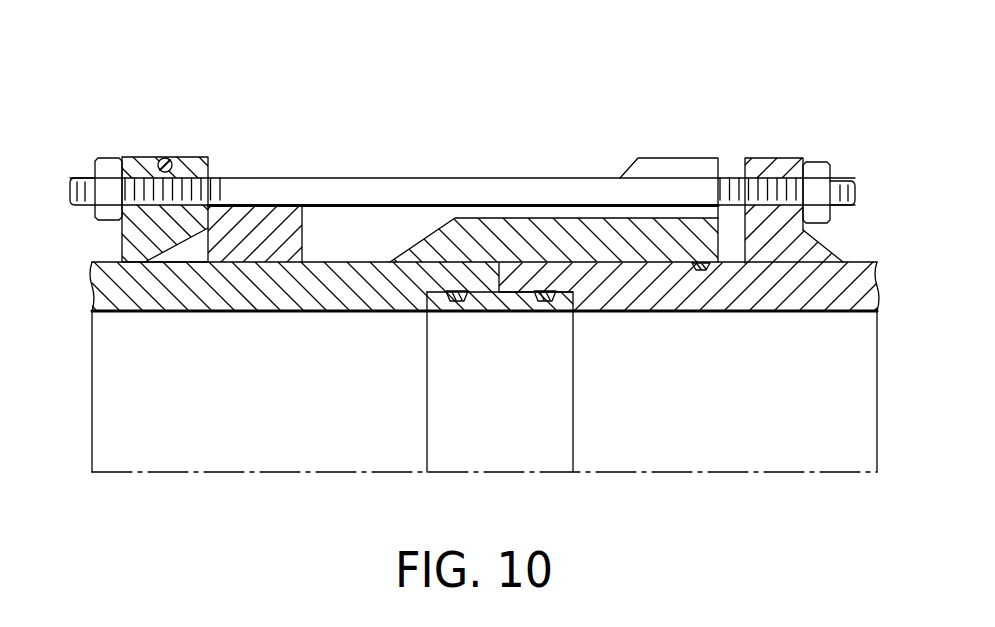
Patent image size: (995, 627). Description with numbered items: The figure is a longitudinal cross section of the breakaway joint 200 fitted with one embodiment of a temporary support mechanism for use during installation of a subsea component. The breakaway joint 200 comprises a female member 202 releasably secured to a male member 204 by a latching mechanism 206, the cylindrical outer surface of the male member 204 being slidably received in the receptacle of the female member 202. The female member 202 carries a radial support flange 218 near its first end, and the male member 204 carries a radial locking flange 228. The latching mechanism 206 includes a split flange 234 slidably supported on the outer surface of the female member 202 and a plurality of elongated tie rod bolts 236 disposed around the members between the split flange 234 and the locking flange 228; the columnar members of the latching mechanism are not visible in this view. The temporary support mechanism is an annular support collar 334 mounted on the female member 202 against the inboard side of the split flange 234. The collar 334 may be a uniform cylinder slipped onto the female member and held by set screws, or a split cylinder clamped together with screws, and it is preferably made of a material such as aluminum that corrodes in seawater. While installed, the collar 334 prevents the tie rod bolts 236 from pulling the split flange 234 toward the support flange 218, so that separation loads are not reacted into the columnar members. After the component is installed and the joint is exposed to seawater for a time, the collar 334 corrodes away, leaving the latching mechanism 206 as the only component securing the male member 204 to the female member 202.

The breakaway joint 200 is at (793, 96).
The female member 202 is at (107, 257).
The male member 204 is at (872, 259).
The latching mechanism 206 is at (490, 152).
The support flange 218 is at (659, 157).
The locking flange 228 is at (768, 157).
The split flange 234 is at (184, 156).
The tie rod bolts 236 is at (392, 177).
The support collar 334 is at (306, 232).